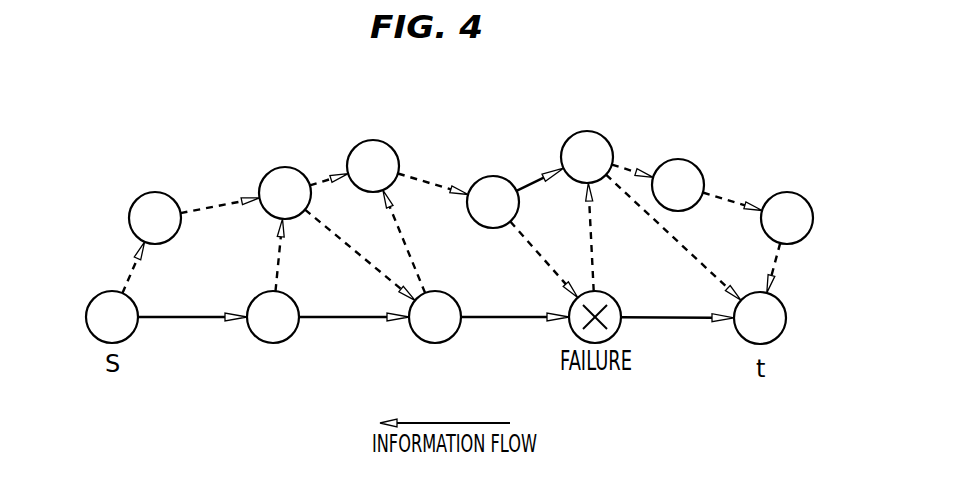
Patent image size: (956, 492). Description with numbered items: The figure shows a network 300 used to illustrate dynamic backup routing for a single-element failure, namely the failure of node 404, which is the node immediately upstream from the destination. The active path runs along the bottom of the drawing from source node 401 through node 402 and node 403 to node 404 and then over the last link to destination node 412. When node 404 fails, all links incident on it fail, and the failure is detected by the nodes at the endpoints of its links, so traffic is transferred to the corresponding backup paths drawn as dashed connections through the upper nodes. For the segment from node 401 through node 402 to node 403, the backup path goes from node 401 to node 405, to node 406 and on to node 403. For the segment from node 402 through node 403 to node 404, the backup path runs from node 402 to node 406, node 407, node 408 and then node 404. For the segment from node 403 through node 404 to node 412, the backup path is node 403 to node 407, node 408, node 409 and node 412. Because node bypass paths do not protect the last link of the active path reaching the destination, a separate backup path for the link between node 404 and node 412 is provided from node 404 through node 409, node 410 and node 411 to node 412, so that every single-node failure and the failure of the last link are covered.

The network 300 is at (802, 133).
The node 401 is at (85, 315).
The node 402 is at (273, 343).
The node 403 is at (432, 343).
The failed node 404 is at (613, 290).
The node 405 is at (130, 215).
The node 406 is at (285, 167).
The node 407 is at (370, 140).
The node 408 is at (493, 176).
The node 409 is at (583, 131).
The node 410 is at (677, 159).
The node 411 is at (813, 222).
The destination node 412 is at (786, 320).